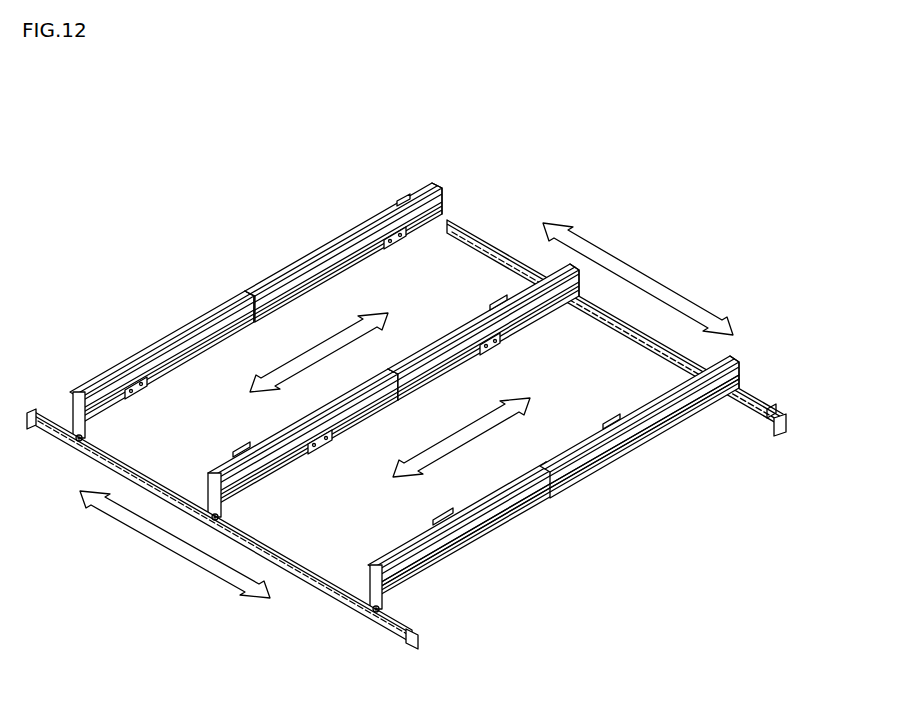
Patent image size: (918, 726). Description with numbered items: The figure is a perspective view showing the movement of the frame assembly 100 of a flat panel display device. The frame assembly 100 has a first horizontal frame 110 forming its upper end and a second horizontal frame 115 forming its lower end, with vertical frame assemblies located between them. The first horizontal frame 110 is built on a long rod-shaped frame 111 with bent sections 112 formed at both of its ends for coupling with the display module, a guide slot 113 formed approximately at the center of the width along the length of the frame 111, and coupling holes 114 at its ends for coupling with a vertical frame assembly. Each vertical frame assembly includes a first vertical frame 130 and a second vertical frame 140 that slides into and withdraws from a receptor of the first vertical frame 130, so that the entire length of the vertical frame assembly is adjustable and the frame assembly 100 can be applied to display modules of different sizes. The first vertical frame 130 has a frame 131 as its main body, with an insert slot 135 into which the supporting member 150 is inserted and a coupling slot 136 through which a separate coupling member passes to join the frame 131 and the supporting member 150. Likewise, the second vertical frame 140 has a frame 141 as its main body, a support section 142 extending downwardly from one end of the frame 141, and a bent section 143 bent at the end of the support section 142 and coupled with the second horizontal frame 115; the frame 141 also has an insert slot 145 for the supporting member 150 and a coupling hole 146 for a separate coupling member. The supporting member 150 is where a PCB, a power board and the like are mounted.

The frame assembly 100 is at (341, 196).
The first horizontal frame 110 is at (778, 399).
The frame 111 is at (502, 250).
The bent section 112 is at (783, 433).
The guide slot 113 is at (470, 237).
The coupling hole 114 is at (781, 412).
The second horizontal frame 115 is at (433, 630).
The first vertical frame 130 is at (618, 468).
The frame 131 is at (580, 448).
The insert slot 135 is at (678, 418).
The coupling slot 136 is at (642, 440).
The second vertical frame 140 is at (478, 541).
The frame 141 is at (405, 550).
The support section 142 is at (372, 587).
The bent section 143 is at (368, 607).
The insert slot 145 is at (510, 497).
The coupling hole 146 is at (503, 523).
The supporting member 150 is at (330, 461).